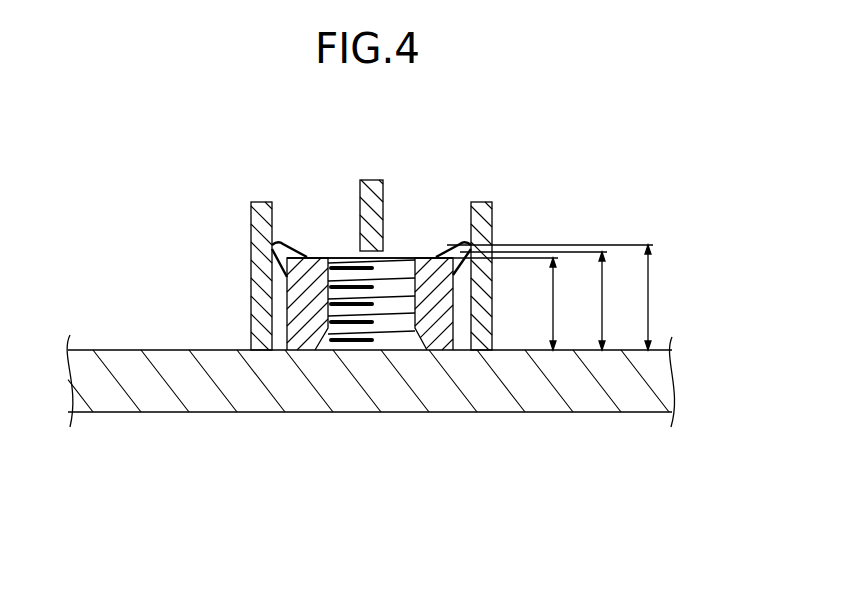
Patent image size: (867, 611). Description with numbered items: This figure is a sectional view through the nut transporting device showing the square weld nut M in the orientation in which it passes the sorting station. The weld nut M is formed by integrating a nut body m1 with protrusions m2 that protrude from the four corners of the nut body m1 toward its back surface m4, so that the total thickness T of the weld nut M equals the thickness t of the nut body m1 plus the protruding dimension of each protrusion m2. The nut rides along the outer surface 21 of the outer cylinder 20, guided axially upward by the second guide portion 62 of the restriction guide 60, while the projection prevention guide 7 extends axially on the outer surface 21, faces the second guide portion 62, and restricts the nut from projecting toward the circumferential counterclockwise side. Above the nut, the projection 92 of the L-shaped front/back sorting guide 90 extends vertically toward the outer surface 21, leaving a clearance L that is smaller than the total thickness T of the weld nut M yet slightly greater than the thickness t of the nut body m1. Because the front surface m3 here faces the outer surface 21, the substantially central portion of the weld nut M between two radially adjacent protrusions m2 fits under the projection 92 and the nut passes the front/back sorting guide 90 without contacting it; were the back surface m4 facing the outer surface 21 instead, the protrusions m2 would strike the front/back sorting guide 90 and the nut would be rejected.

The outer cylinder 20 is at (370, 414).
The outer surface 21 is at (180, 400).
The restriction guide 60 is at (191, 276).
The second guide portion 62 is at (251, 300).
The front/back sorting guide 90 is at (420, 176).
The projection 92 is at (383, 193).
The projection prevention guide 7 is at (491, 290).
The weld nut M is at (319, 312).
The nut body m1 is at (437, 337).
The protrusions m2 is at (277, 247).
The front surface m3 is at (367, 352).
The back surface m4 is at (287, 257).
The thickness t is at (515, 304).
The clearance L is at (544, 301).
The total thickness T is at (561, 297).